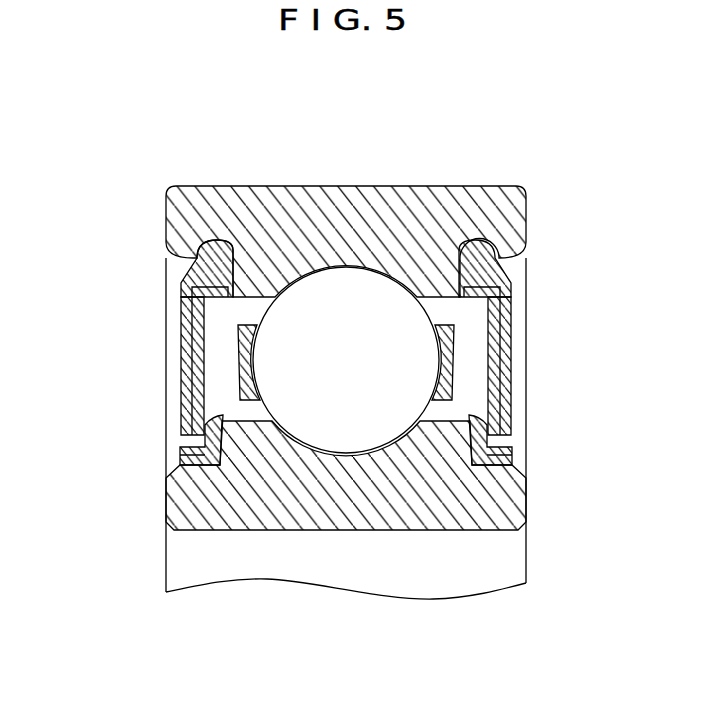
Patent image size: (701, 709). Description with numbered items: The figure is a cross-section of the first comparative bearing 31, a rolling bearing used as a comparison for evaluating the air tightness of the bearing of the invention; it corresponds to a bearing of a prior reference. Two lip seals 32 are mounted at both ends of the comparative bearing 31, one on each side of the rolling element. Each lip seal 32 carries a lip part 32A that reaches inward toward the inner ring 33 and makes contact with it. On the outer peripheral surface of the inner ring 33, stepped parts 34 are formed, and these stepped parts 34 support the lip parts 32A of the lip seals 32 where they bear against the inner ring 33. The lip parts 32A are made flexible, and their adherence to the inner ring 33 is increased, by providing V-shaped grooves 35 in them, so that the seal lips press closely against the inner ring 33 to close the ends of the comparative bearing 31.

The comparative bearing 31 is at (524, 149).
The lip seal 32 is at (190, 325).
The lip part 32A is at (177, 457).
The inner ring 33 is at (498, 497).
The stepped part 34 is at (190, 407).
The V-shaped groove 35 is at (190, 443).